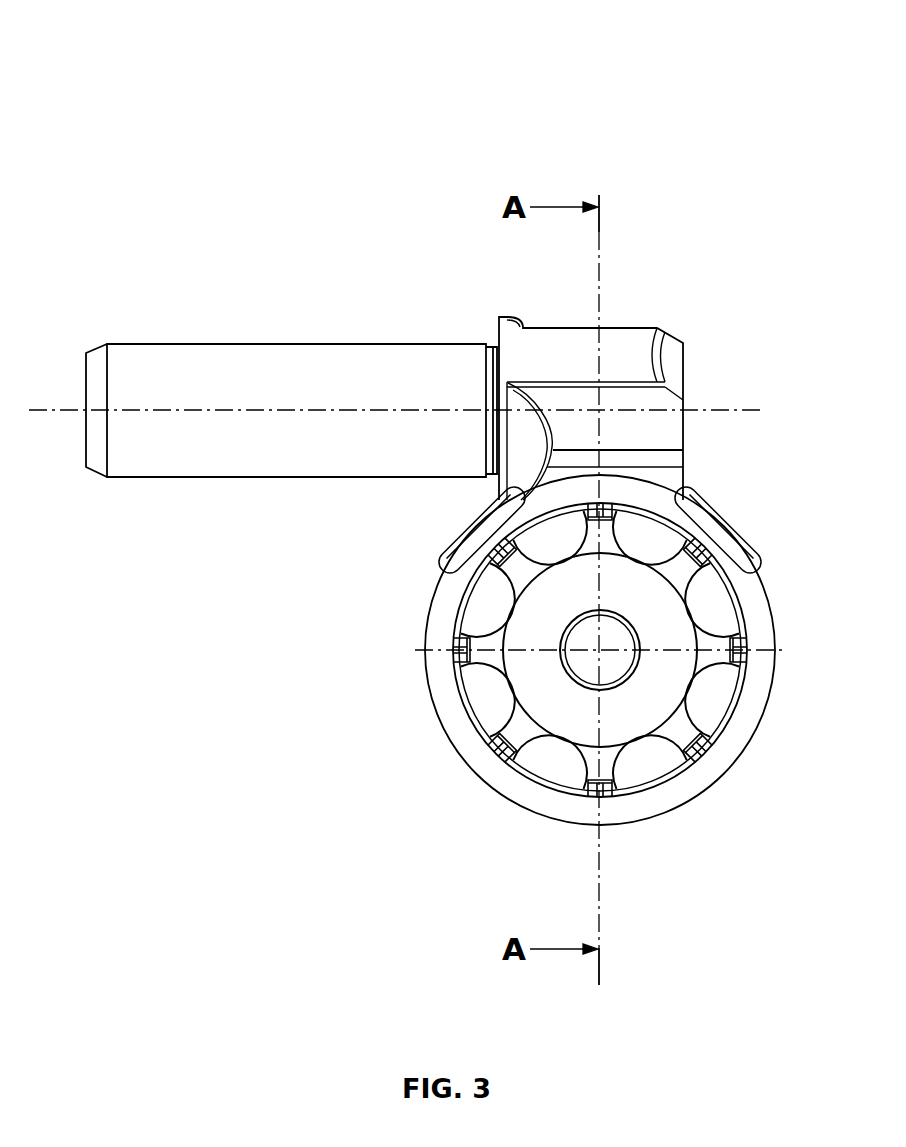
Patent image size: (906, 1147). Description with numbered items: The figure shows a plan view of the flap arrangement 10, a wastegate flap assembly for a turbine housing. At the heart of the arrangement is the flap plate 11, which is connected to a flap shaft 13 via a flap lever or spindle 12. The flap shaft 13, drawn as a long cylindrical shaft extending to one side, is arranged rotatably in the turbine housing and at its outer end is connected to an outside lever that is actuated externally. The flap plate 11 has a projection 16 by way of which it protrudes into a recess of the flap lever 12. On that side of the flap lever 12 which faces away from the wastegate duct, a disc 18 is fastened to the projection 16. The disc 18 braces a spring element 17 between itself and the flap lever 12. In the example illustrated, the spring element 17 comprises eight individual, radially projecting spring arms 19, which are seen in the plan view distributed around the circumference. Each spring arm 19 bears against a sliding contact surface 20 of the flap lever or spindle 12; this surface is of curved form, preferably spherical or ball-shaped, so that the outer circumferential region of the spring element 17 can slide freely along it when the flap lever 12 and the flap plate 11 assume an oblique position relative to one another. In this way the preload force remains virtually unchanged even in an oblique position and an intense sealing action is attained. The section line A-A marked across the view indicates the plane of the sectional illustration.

The flap arrangement 10 is at (131, 153).
The flap plate 11 is at (753, 578).
The flap lever or spindle 12 is at (501, 689).
The flap shaft 13 is at (275, 366).
The projection 16 is at (620, 638).
The spring element 17 is at (705, 678).
The disc 18 is at (660, 604).
The spring arm 19 is at (503, 550).
The sliding contact surface 20 is at (470, 605).